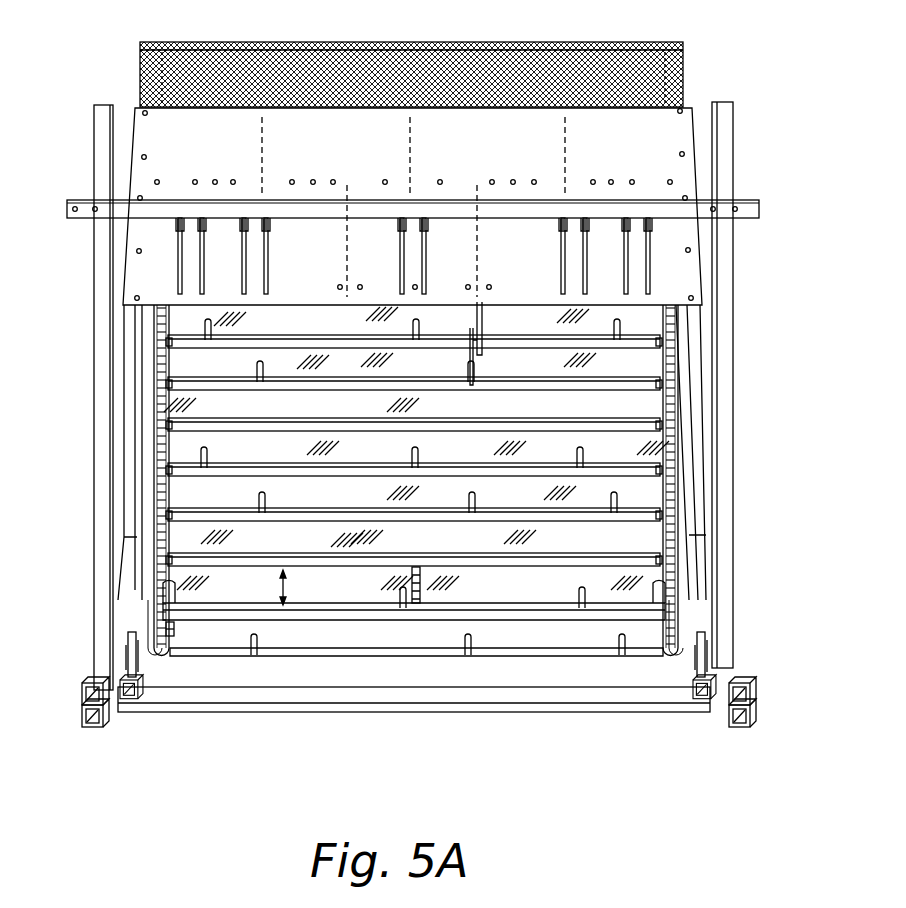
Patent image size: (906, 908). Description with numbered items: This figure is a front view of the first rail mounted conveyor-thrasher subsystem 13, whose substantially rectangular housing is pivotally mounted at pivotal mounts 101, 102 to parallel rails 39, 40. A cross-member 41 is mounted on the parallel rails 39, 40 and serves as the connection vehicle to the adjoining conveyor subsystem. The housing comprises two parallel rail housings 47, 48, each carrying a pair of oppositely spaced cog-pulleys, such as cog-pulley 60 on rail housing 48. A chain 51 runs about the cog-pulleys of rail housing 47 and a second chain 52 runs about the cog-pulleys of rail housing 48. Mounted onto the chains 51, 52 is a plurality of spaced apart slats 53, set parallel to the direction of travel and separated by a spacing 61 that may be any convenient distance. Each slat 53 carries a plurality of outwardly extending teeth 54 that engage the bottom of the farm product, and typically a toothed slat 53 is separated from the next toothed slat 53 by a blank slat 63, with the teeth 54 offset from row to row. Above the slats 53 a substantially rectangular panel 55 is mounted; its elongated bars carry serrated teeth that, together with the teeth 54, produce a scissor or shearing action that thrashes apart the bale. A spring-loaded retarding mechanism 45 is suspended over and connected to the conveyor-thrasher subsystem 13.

The first rail mounted conveyor-thrasher subsystem 13 is at (697, 70).
The spring-loaded retarding mechanism 45 is at (738, 143).
The substantially rectangular panel 55 is at (133, 108).
The parallel rail housing 47 is at (698, 377).
The parallel rail housing 48 is at (132, 408).
The second chain 52 is at (155, 660).
The chain 51 is at (673, 660).
The blank slat 63 is at (542, 563).
The spaced apart slats 53 is at (382, 610).
The outwardly extending teeth 54 is at (468, 655).
The spacing 61 is at (290, 588).
The cog-pulley 60 is at (170, 630).
The cross-member 41 is at (623, 703).
The pivotal mount 101 is at (127, 658).
The pivotal mount 102 is at (703, 657).
The parallel rail 40 is at (92, 732).
The parallel rail 39 is at (752, 720).